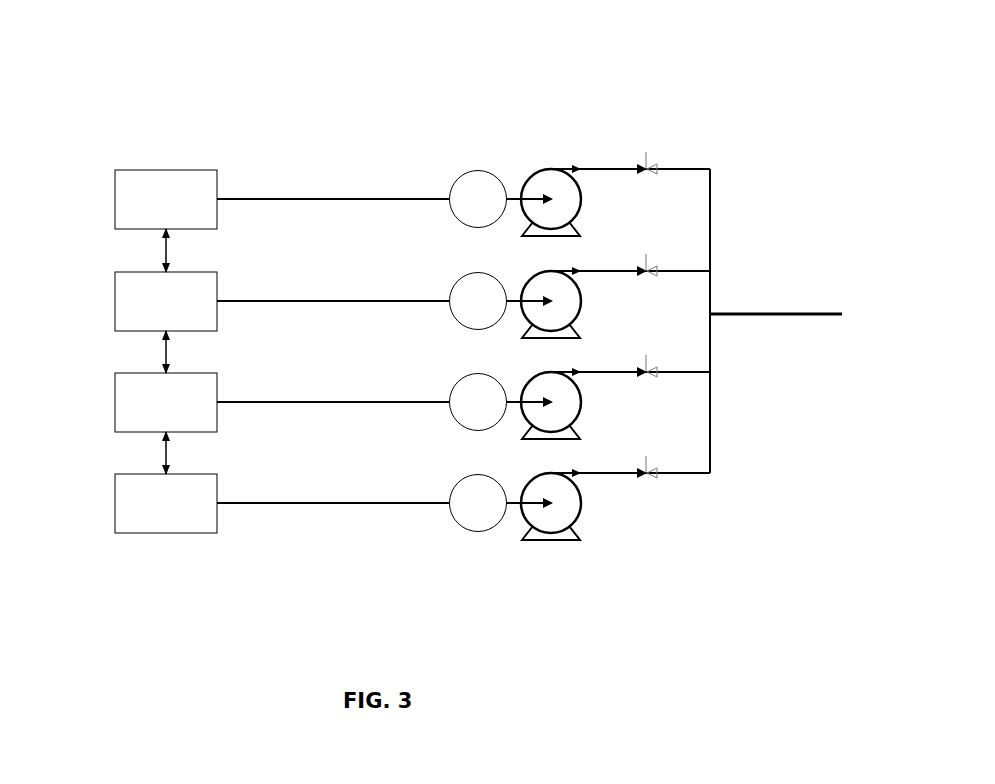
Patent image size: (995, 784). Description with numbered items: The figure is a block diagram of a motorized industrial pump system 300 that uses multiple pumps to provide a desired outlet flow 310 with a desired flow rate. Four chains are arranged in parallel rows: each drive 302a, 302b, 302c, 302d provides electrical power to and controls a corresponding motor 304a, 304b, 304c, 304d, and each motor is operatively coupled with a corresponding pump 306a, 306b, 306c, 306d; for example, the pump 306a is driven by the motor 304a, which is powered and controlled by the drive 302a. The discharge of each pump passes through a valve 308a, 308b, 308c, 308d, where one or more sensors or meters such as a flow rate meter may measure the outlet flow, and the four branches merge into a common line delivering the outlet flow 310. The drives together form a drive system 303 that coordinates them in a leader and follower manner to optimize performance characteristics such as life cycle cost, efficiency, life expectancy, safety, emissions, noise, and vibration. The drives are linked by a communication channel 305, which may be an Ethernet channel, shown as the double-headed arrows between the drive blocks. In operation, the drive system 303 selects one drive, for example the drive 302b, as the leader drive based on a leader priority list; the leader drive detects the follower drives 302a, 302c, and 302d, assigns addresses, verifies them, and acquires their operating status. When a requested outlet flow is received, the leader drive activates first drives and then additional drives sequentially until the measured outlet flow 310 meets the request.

The motorized industrial pump system 300 is at (672, 68).
The drive 302a is at (115, 199).
The drive 302b is at (115, 301).
The drive 302c is at (115, 402).
The drive 302d is at (115, 503).
The drive system 303 is at (207, 155).
The motor 304a is at (450, 192).
The motor 304b is at (450, 294).
The motor 304c is at (450, 395).
The motor 304d is at (450, 496).
The communication channel 305 is at (170, 245).
The pump 306a is at (531, 181).
The pump 306b is at (531, 283).
The pump 306c is at (531, 384).
The pump 306d is at (531, 485).
The valve 308a is at (640, 164).
The valve 308b is at (640, 266).
The valve 308c is at (640, 367).
The valve 308d is at (640, 468).
The outlet flow 310 is at (790, 314).